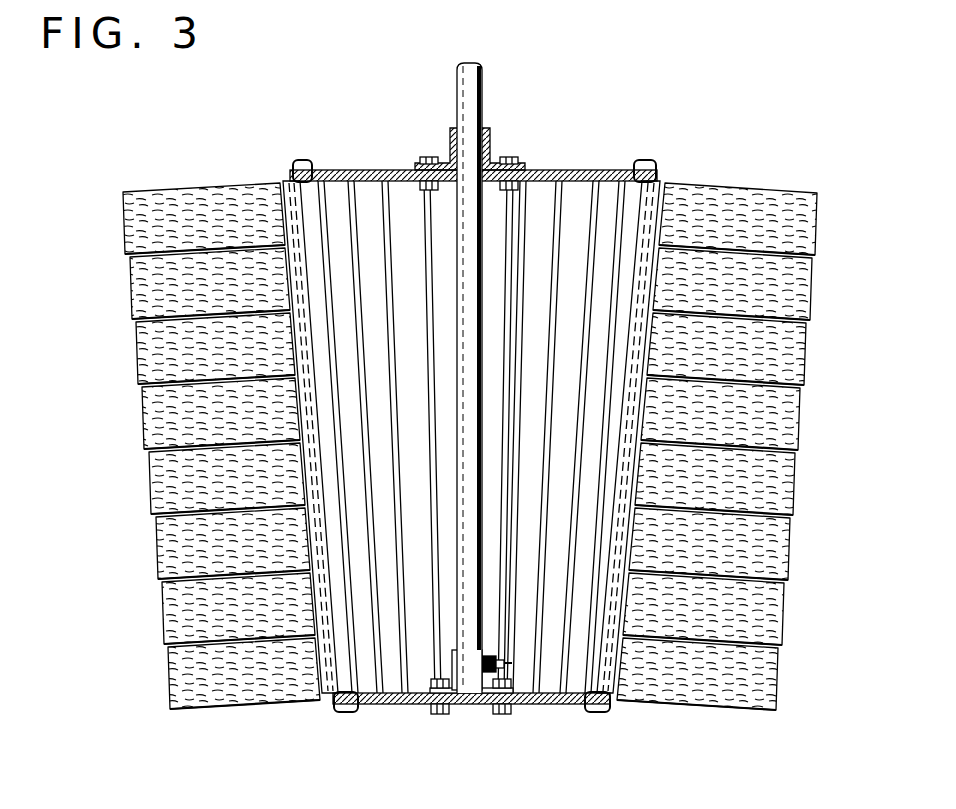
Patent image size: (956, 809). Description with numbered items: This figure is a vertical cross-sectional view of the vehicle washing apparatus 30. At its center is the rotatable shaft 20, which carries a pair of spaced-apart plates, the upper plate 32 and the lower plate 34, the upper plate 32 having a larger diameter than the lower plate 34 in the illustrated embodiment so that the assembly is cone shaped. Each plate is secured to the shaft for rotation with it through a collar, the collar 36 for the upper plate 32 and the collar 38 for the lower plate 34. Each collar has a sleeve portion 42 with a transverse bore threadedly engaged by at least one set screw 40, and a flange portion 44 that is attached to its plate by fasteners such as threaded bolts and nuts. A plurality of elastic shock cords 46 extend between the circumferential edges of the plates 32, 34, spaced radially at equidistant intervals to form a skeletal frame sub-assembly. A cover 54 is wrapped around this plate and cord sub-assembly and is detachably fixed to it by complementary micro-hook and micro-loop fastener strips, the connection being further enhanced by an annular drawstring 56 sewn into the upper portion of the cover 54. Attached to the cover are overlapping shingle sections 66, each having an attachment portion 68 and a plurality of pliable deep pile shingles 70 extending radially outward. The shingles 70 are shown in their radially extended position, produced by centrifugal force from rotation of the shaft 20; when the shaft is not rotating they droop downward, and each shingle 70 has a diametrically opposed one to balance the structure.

The rotatable shaft 20 is at (483, 97).
The vehicle washing apparatus 30 is at (585, 115).
The upper plate 32 is at (370, 168).
The lower plate 34 is at (460, 704).
The collar 36 is at (441, 139).
The collar 38 is at (515, 667).
The set screw 40 is at (505, 663).
The sleeve portion 42 is at (470, 670).
The flange portion 44 is at (417, 704).
The elastic cords 46 is at (647, 160).
The cover 54 is at (684, 166).
The drawstring 56 is at (298, 163).
The shingle sections 66 is at (770, 185).
The attachment portion 68 is at (623, 697).
The shingles 70 is at (716, 707).